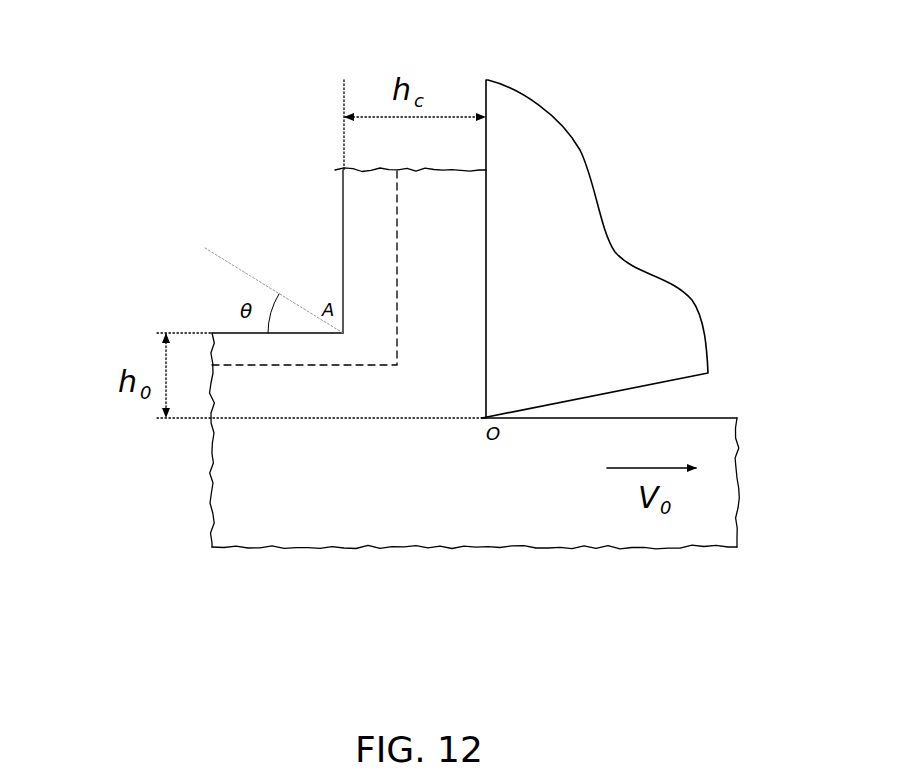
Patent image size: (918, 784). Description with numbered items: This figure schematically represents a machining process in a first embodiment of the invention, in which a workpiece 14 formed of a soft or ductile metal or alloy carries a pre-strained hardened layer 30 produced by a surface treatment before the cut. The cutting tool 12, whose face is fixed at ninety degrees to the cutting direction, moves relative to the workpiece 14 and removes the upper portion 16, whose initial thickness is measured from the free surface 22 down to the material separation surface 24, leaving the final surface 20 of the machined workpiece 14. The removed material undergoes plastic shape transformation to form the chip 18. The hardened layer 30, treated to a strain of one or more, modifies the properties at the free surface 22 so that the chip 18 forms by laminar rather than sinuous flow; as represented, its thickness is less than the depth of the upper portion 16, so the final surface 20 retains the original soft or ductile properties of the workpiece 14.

The cutting tool 12 is at (590, 253).
The workpiece 14 is at (343, 515).
The upper portion 16 is at (250, 400).
The chip 18 is at (450, 225).
The final surface 20 is at (717, 415).
The free surface 22 is at (238, 330).
The material separation surface 24 is at (298, 422).
The hardened layer 30 is at (225, 355).